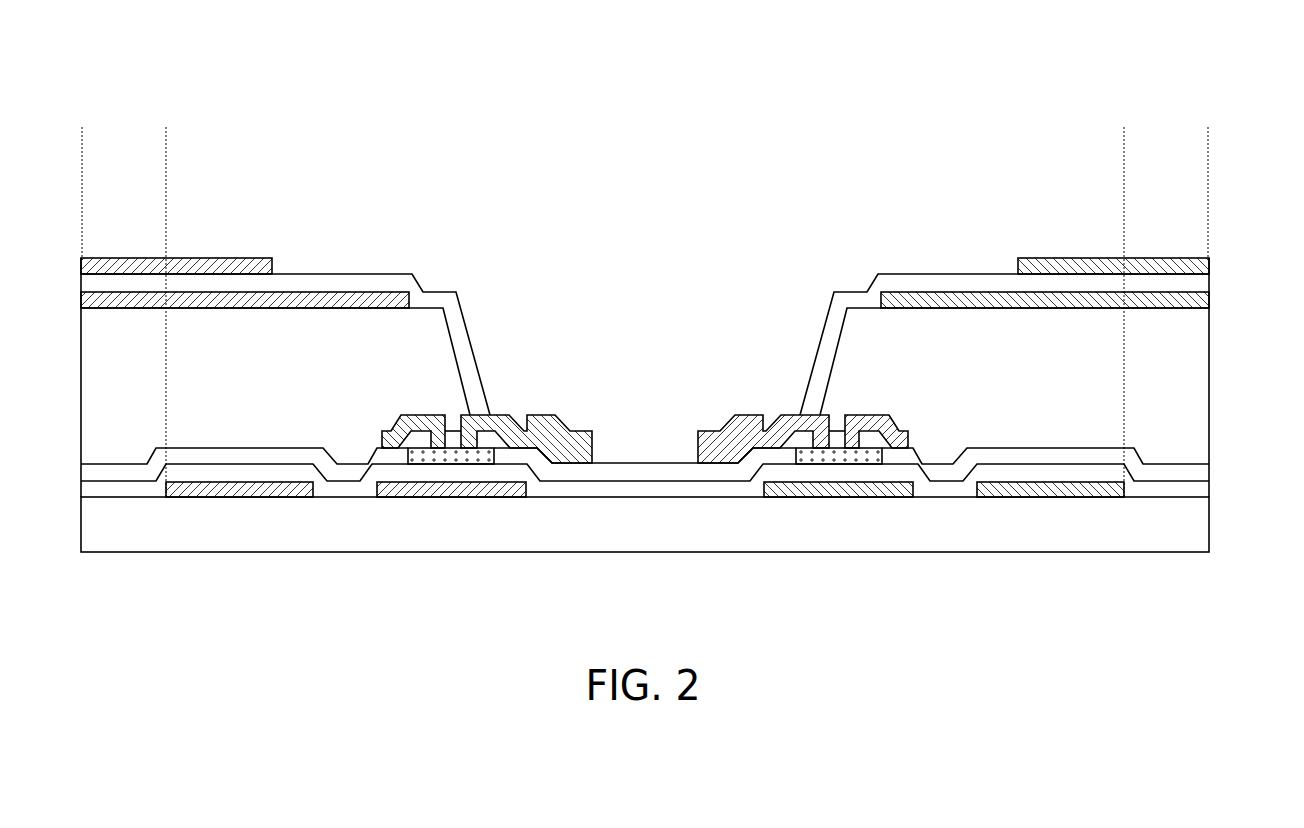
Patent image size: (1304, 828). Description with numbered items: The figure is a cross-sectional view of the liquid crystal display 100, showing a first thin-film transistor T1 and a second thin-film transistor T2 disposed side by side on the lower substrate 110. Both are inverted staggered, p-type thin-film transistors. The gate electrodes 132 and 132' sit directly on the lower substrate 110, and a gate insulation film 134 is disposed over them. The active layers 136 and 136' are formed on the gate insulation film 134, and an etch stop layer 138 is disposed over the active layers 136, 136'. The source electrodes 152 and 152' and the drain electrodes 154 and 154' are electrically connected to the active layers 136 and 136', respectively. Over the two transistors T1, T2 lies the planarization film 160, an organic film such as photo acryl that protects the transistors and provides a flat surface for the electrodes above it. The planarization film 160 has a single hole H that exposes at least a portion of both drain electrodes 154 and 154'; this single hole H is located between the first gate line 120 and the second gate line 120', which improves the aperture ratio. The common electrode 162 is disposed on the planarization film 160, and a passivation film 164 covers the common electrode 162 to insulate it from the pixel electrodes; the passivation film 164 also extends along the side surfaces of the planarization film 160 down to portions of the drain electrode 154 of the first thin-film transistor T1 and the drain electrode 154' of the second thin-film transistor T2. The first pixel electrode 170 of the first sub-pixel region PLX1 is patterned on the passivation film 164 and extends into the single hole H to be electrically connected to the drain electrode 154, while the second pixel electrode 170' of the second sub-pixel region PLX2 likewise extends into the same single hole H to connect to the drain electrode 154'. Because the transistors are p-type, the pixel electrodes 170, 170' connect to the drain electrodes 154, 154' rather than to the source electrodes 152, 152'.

The liquid crystal display 100 is at (1167, 55).
The lower substrate 110 is at (1185, 521).
The first gate line 120 is at (239, 541).
The second gate line 120' is at (1050, 541).
The gate electrode 132 is at (451, 541).
The gate electrode 132' is at (838, 541).
The gate insulation film 134 is at (1185, 489).
The active layer 136 is at (463, 524).
The active layer 136' is at (822, 524).
The etch stop layer 138 is at (1185, 472).
The source electrode 152 is at (407, 508).
The source electrode 152' is at (883, 508).
The drain electrode 154 is at (518, 508).
The drain electrode 154' is at (770, 508).
The planarization film 160 is at (1185, 382).
The common electrode 162 is at (1187, 303).
The passivation film 164 is at (1185, 285).
The first pixel electrode 170 is at (142, 263).
The second pixel electrode 170' is at (1150, 263).
The single hole H is at (647, 352).
The first thin-film transistor T1 is at (388, 406).
The second thin-film transistor T2 is at (887, 406).
The first sub-pixel region PLX1 is at (158, 164).
The second sub-pixel region PLX2 is at (1201, 164).